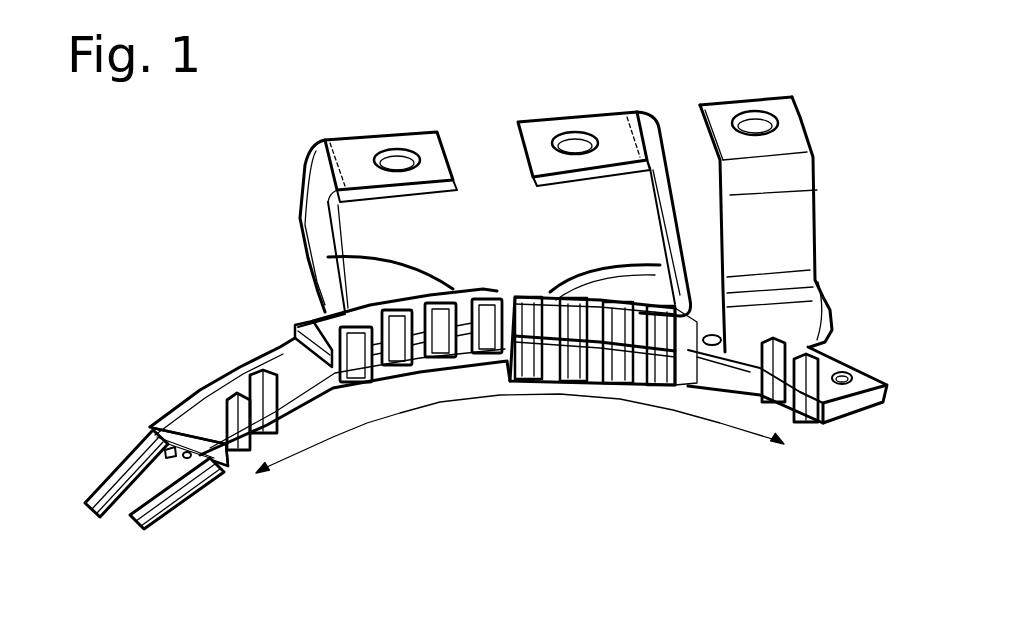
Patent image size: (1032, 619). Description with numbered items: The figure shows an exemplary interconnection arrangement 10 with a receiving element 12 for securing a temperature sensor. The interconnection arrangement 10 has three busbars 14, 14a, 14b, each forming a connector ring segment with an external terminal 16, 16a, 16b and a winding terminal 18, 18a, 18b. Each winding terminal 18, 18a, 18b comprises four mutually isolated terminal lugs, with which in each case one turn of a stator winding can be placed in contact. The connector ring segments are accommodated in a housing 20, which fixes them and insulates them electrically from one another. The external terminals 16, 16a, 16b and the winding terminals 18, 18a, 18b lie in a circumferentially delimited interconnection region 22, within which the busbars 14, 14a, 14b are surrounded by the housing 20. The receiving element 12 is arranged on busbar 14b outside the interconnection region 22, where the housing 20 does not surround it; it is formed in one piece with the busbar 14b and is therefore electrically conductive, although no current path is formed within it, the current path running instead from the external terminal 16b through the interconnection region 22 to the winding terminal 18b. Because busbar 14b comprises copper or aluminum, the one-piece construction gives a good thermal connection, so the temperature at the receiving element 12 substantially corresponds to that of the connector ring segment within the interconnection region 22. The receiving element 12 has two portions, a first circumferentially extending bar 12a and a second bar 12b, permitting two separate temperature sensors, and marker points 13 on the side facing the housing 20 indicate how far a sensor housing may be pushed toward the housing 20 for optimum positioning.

The interconnection arrangement 10 is at (157, 178).
The receiving element 12 is at (107, 455).
The first circumferentially extending bar 12a is at (120, 488).
The second bar 12b is at (147, 472).
The marker points 13 is at (180, 437).
The busbar 14 is at (318, 279).
The busbar 14a is at (657, 229).
The busbar 14b is at (787, 230).
The external terminal 16 is at (355, 162).
The external terminal 16a is at (608, 128).
The external terminal 16b is at (787, 143).
The winding terminal 18 is at (407, 378).
The winding terminal 18a is at (613, 383).
The winding terminal 18b is at (240, 457).
The housing 20 is at (199, 407).
The interconnection region 22 is at (330, 430).